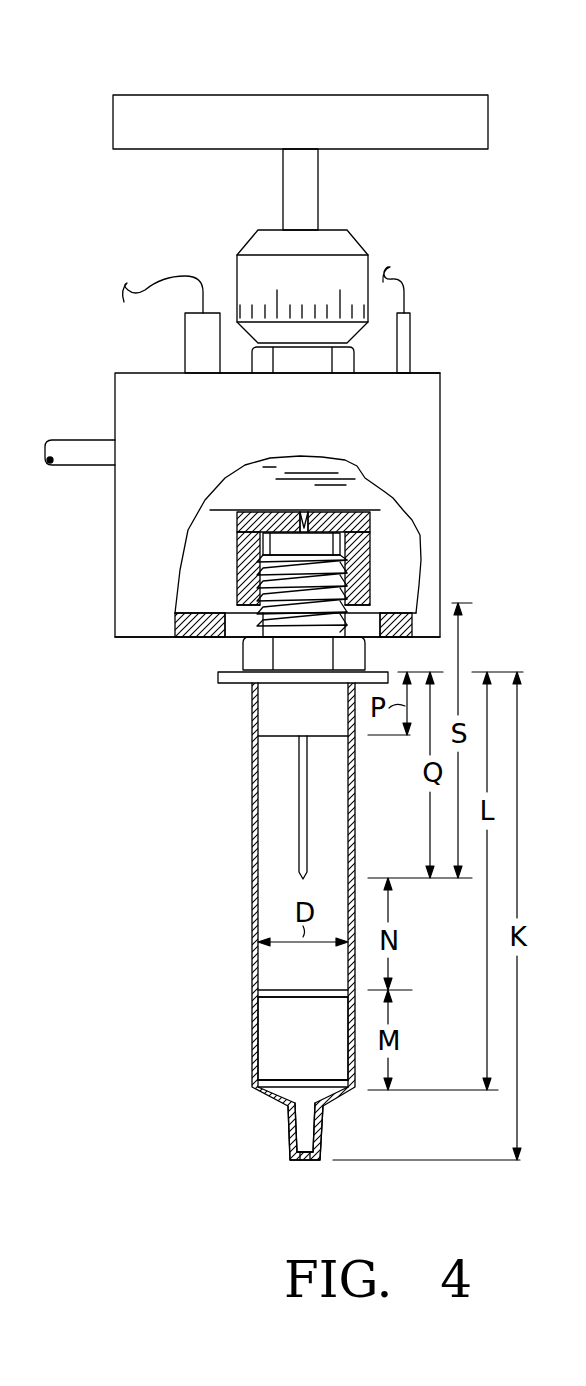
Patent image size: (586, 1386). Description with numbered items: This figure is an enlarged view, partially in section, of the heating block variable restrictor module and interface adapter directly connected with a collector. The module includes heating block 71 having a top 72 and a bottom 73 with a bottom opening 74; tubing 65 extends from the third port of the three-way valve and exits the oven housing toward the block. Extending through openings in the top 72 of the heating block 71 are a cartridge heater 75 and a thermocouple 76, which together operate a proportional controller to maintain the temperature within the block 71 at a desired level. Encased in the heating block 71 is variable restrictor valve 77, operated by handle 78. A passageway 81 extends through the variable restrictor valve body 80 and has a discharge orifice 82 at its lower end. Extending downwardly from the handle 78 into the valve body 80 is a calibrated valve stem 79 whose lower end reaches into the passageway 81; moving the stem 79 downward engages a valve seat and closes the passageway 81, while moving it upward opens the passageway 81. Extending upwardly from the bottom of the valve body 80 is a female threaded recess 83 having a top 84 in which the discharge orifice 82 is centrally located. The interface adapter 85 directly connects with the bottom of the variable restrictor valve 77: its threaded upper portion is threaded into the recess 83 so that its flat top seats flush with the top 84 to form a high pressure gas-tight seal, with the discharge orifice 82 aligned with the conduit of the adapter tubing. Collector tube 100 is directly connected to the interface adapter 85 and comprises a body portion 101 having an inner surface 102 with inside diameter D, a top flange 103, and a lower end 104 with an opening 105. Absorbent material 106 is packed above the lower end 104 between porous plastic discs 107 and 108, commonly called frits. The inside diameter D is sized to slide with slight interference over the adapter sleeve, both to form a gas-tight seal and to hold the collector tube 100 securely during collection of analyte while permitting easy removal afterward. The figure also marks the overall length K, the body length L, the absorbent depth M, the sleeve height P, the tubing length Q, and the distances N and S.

The handle 78 is at (452, 106).
The calibrated valve stem 79 is at (305, 183).
The variable restrictor valve 77 is at (370, 240).
The cartridge heater 75 is at (195, 338).
The thermocouple 76 is at (411, 327).
The heating block 71 is at (115, 383).
The top 72 is at (428, 373).
The tubing 65 is at (70, 450).
The variable restrictor valve body 80 is at (302, 476).
The top 84 is at (287, 523).
The passageway 81 is at (305, 525).
The discharge orifice 82 is at (370, 519).
The female threaded recess 83 is at (237, 560).
The bottom opening 74 is at (375, 626).
The bottom 73 is at (131, 640).
The interface adapter 85 is at (235, 652).
The top flange 103 is at (233, 685).
The collector tube 100 is at (224, 773).
The body portion 101 is at (250, 811).
The inner surface 102 is at (255, 866).
The porous plastic disc 107 is at (287, 990).
The absorbent material 106 is at (275, 1026).
The porous plastic disc 108 is at (290, 1080).
The lower end 104 is at (322, 1141).
The opening 105 is at (300, 1161).